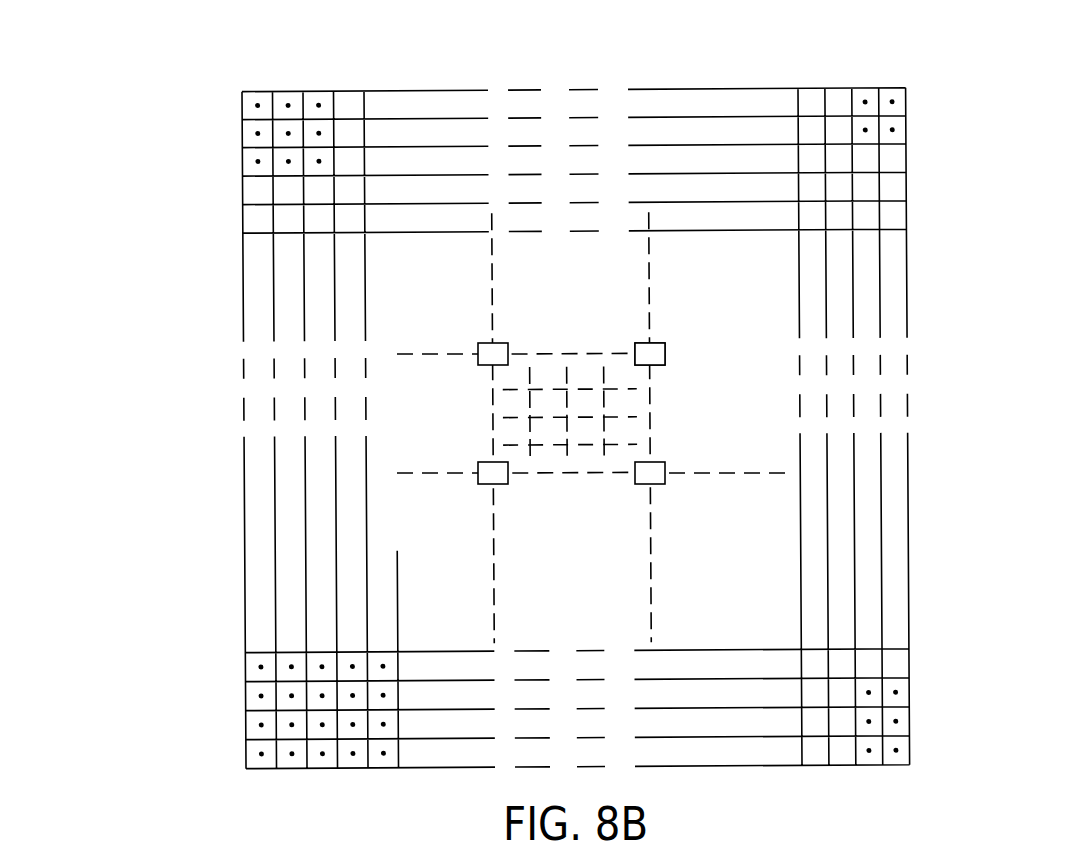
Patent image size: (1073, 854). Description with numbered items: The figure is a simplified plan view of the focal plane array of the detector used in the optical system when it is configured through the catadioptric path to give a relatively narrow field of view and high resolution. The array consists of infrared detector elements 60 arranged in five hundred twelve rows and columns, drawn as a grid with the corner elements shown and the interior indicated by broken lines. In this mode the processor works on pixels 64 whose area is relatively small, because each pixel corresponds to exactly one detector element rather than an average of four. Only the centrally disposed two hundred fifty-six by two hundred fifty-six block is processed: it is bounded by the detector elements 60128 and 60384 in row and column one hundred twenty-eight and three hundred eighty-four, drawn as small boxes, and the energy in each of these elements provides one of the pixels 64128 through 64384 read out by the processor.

The detector elements 60 is at (935, 742).
The pixels 64 is at (893, 790).
The detector element in row or column one hundred twenty-eight 60128 is at (520, 502).
The detector element in row or column three hundred eighty-four 60384 is at (651, 344).
The pixel at index one hundred twenty-eight 64128 is at (480, 475).
The pixel at index three hundred eighty-four 64384 is at (665, 360).